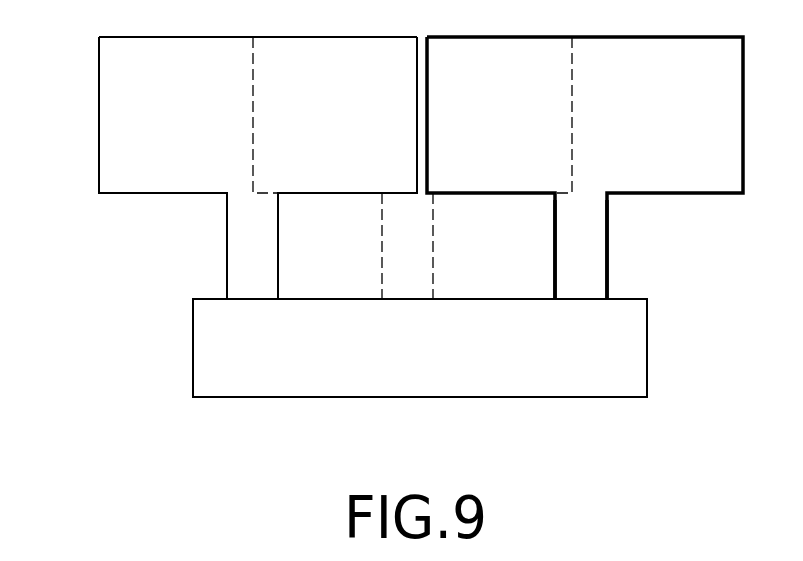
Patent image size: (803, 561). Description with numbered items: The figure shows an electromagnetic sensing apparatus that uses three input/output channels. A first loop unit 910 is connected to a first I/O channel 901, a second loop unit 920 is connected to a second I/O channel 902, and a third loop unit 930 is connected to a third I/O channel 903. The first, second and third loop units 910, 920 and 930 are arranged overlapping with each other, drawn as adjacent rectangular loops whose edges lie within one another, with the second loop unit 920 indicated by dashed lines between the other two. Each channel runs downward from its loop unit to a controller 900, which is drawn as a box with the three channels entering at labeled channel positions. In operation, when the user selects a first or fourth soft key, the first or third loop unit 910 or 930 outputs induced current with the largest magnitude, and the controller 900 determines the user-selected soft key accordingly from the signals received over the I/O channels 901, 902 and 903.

The controller 900 is at (416, 398).
The first I/O channel 901 is at (280, 276).
The second I/O channel 902 is at (435, 276).
The third I/O channel 903 is at (608, 276).
The first loop unit 910 is at (226, 217).
The second loop unit 920 is at (381, 216).
The third loop unit 930 is at (553, 217).